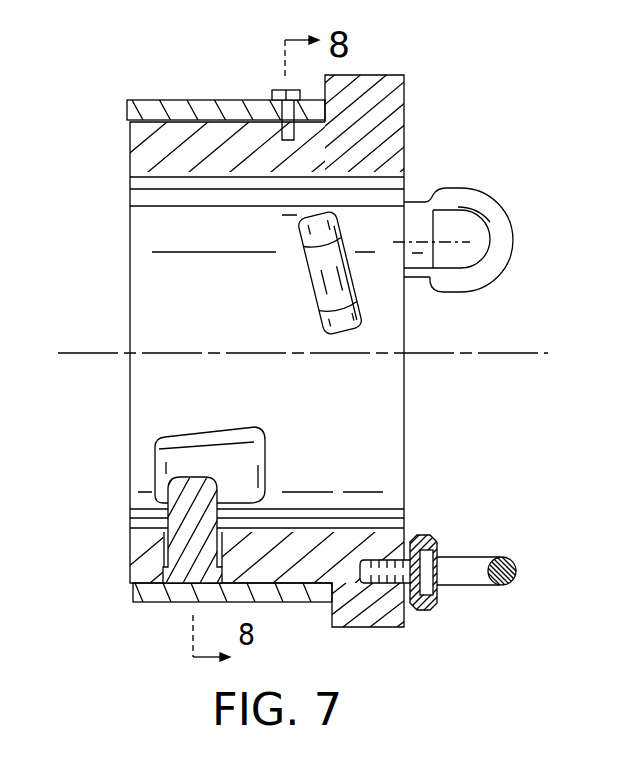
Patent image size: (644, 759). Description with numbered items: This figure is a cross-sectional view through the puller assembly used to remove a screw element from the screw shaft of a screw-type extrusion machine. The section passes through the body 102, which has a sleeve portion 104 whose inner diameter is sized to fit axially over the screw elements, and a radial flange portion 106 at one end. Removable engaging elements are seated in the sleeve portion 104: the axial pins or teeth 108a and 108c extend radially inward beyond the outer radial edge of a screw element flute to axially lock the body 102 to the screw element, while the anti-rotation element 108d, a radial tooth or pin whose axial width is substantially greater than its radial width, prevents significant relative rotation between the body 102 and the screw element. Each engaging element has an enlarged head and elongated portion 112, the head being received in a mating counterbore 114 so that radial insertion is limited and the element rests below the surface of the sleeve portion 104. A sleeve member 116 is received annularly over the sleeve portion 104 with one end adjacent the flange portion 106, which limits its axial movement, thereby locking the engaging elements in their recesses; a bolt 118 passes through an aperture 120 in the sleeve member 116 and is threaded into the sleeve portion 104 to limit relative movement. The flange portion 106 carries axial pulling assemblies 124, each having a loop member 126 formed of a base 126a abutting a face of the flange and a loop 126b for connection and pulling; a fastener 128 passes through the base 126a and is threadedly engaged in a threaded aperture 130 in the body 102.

The body 102 is at (363, 417).
The sleeve portion 104 is at (145, 268).
The radial flange portion 106 is at (407, 90).
The engaging element 108a is at (313, 263).
The engaging element 108c is at (187, 523).
The anti-rotation element 108d is at (219, 450).
The engaging element portions 112 is at (176, 575).
The counterbore 114 is at (133, 585).
The sleeve member 116 is at (198, 107).
The bolt 118 is at (300, 90).
The aperture 120 is at (292, 113).
The axial pulling assembly 124 is at (497, 194).
The loop member 126 is at (433, 283).
The base 126a is at (413, 203).
The loop 126b is at (493, 268).
The fastener 128 is at (418, 614).
The threaded aperture 130 is at (380, 583).